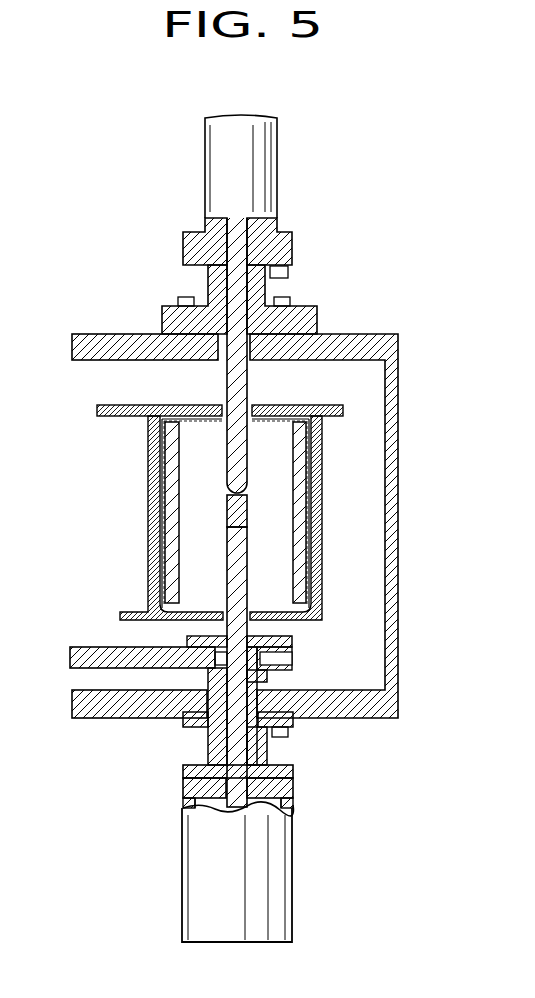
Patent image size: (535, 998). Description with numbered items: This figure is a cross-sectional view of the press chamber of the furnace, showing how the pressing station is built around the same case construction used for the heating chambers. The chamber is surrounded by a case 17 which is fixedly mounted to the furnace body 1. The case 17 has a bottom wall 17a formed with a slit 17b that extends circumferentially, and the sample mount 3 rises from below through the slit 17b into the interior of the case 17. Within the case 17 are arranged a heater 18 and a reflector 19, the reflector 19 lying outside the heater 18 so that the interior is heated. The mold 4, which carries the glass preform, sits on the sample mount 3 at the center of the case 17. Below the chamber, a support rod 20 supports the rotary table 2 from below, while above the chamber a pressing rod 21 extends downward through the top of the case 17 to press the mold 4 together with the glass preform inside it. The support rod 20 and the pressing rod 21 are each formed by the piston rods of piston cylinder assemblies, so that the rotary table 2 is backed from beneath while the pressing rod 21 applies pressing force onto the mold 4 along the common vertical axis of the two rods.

The furnace body 1 is at (395, 482).
The rotary table 2 is at (100, 647).
The sample mount 3 is at (247, 572).
The mold 4 is at (247, 517).
The case 17 is at (313, 406).
The bottom wall 17a is at (305, 621).
The slit 17b is at (225, 606).
The heater 18 is at (298, 497).
The reflector 19 is at (311, 550).
The support rod 20 is at (235, 739).
The pressing rod 21 is at (231, 386).